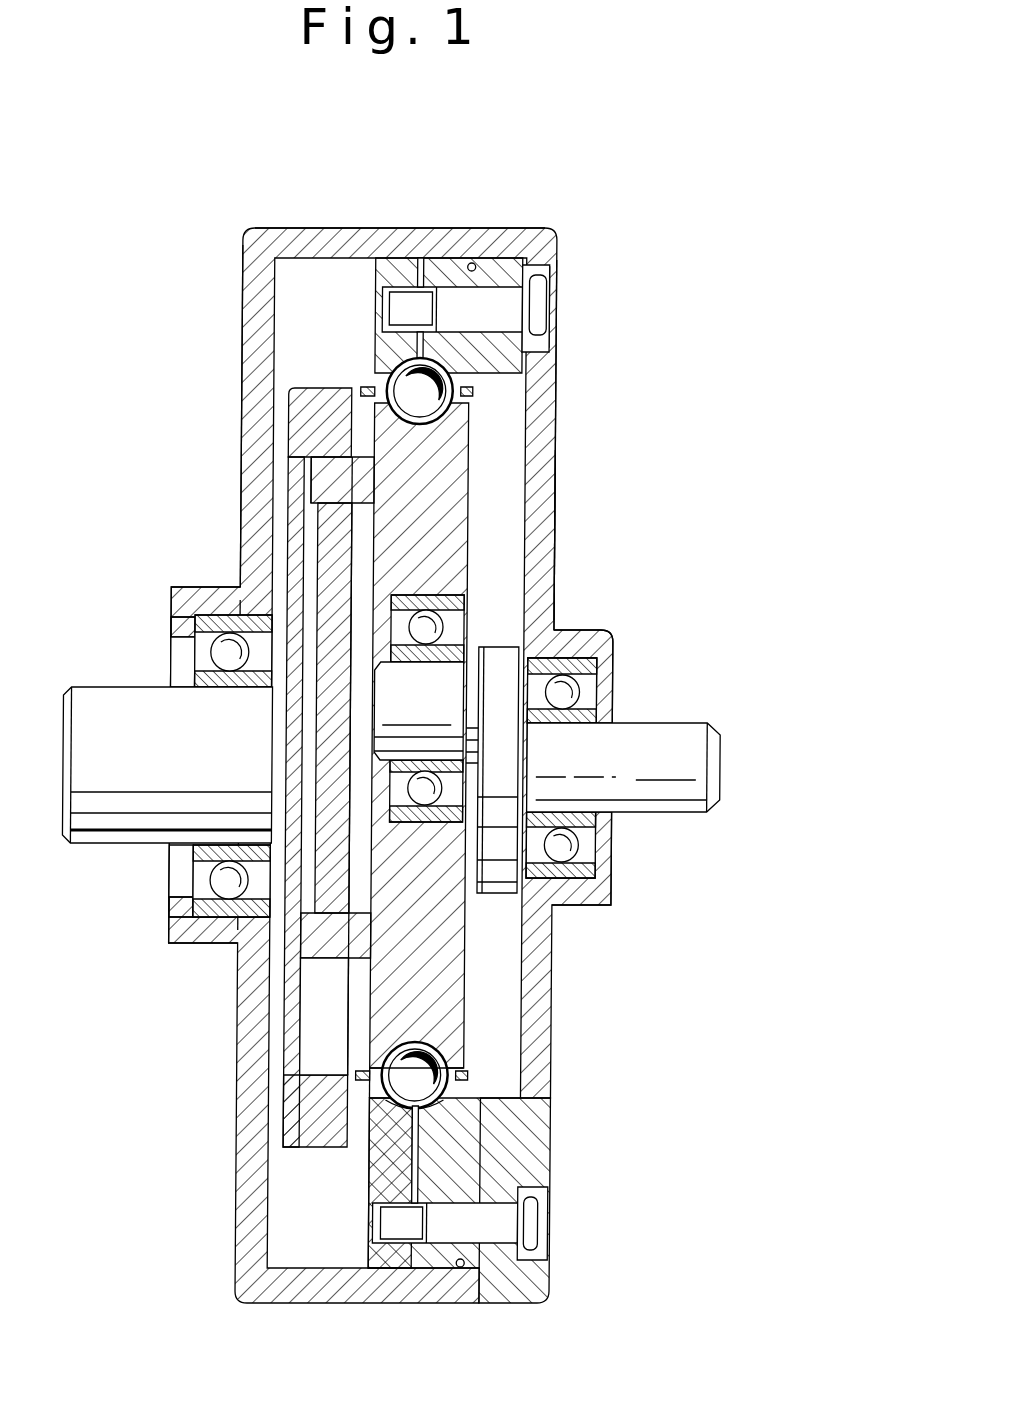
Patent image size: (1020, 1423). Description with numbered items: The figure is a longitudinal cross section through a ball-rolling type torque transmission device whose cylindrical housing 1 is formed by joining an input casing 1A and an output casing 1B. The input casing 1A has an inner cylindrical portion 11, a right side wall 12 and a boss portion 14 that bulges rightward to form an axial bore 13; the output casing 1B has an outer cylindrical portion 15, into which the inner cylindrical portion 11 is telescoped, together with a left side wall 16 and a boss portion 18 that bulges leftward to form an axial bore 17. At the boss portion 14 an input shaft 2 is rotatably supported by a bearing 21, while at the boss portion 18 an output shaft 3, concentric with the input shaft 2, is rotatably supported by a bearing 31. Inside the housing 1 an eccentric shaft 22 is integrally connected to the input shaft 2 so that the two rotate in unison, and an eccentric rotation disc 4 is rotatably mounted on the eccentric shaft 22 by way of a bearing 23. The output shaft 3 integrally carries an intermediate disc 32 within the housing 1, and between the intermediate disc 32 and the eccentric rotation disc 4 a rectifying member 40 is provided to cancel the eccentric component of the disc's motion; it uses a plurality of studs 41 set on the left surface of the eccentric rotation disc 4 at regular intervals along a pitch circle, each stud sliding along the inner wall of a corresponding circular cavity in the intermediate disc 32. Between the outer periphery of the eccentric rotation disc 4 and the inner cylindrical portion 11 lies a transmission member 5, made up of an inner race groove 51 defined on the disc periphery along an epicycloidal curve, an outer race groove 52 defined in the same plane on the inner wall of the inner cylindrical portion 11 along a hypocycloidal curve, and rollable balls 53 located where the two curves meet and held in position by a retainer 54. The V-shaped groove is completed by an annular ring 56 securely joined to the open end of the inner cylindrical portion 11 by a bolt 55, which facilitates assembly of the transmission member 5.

The cylindrical housing 1 is at (555, 220).
The input casing 1A is at (563, 446).
The output casing 1B is at (243, 425).
The input shaft 2 is at (690, 755).
The output shaft 3 is at (118, 805).
The eccentric rotation disc 4 is at (418, 962).
The transmission member 5 is at (360, 1110).
The inner cylindrical portion 11 is at (497, 357).
The right side wall 12 is at (545, 500).
The axial bore 13 is at (612, 706).
The boss portion 14 is at (582, 642).
The outer cylindrical portion 15 is at (392, 240).
The left side wall 16 is at (248, 340).
The axial bore 17 is at (176, 652).
The boss portion 18 is at (207, 590).
The bearing 21 is at (602, 878).
The eccentric shaft 22 is at (427, 690).
The bearing 23 is at (447, 618).
The bearing 31 is at (186, 920).
The intermediate disc 32 is at (300, 488).
The rectifying member 40 is at (316, 1010).
The studs 41 is at (337, 464).
The inner race groove 51 is at (458, 1062).
The outer race groove 52 is at (470, 1142).
The rollable balls 53 is at (462, 1100).
The retainer 54 is at (458, 1078).
The bolt 55 is at (516, 305).
The annular ring 56 is at (372, 268).